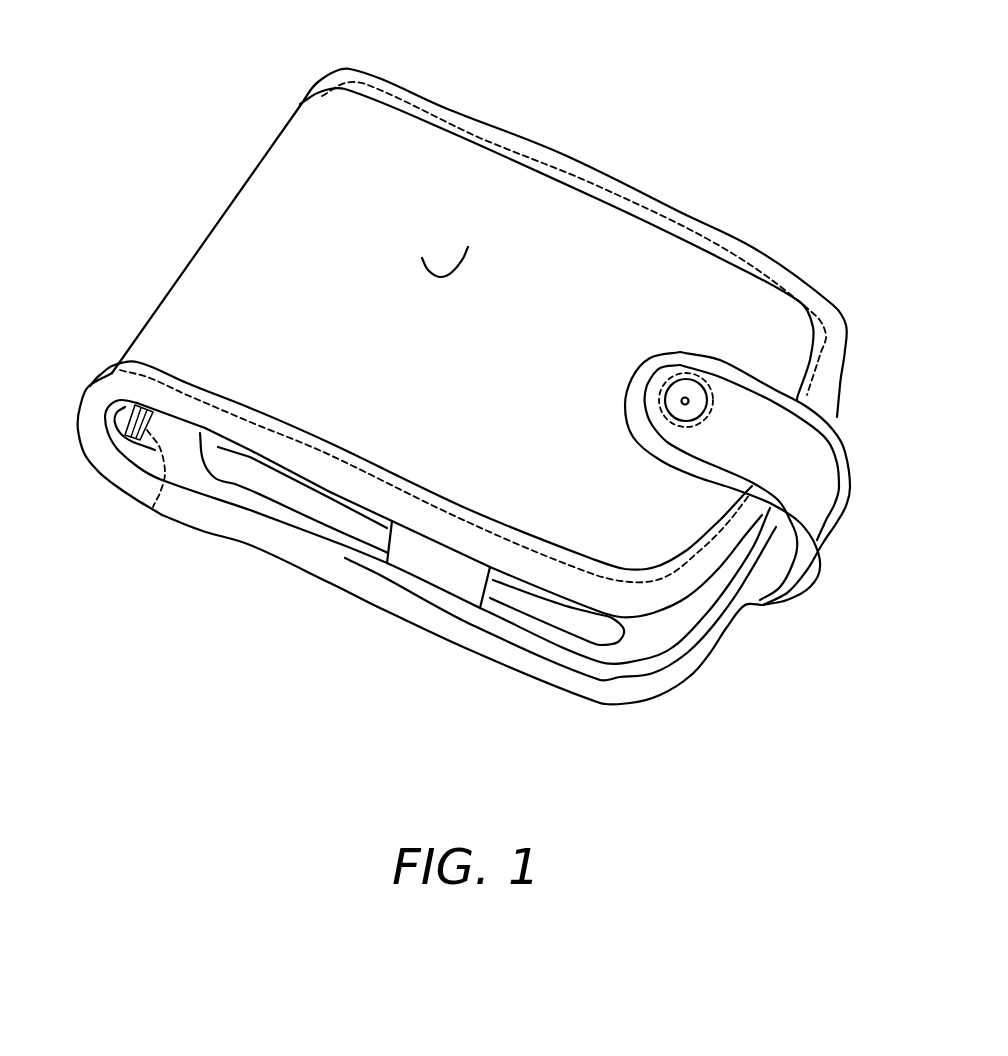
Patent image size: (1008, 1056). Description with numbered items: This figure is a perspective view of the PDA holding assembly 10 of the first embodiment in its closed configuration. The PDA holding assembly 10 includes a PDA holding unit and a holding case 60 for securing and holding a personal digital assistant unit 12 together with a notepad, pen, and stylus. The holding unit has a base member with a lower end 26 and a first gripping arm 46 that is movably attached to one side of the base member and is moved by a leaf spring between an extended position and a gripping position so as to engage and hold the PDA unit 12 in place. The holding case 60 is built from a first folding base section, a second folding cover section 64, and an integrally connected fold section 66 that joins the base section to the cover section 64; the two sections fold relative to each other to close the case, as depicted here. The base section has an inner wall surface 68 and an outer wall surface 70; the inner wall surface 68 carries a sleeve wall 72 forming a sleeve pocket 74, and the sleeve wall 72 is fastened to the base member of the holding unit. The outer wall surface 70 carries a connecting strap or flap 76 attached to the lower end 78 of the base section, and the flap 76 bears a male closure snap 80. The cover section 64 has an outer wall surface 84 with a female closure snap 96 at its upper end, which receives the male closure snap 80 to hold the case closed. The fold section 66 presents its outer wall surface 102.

The PDA holding assembly 10 is at (593, 62).
The personal digital assistant (PDA) unit 12 is at (263, 477).
The lower end 26 is at (657, 633).
The first gripping arm 46 is at (443, 573).
The holding case 60 is at (323, 150).
The second folding cover section 64 is at (573, 210).
The integrally connected fold section 66 is at (83, 400).
The inner wall surface 68 is at (140, 410).
The outer wall surface 70 is at (155, 507).
The sleeve wall 72 is at (185, 437).
The sleeve pocket 74 is at (122, 426).
The connecting strap or flap 76 is at (820, 513).
The lower end 78 is at (733, 617).
The male closure snap 80 is at (692, 406).
The outer wall surface 84 is at (438, 251).
The female closure snap 96 is at (688, 376).
The outer wall surface 102 is at (237, 188).